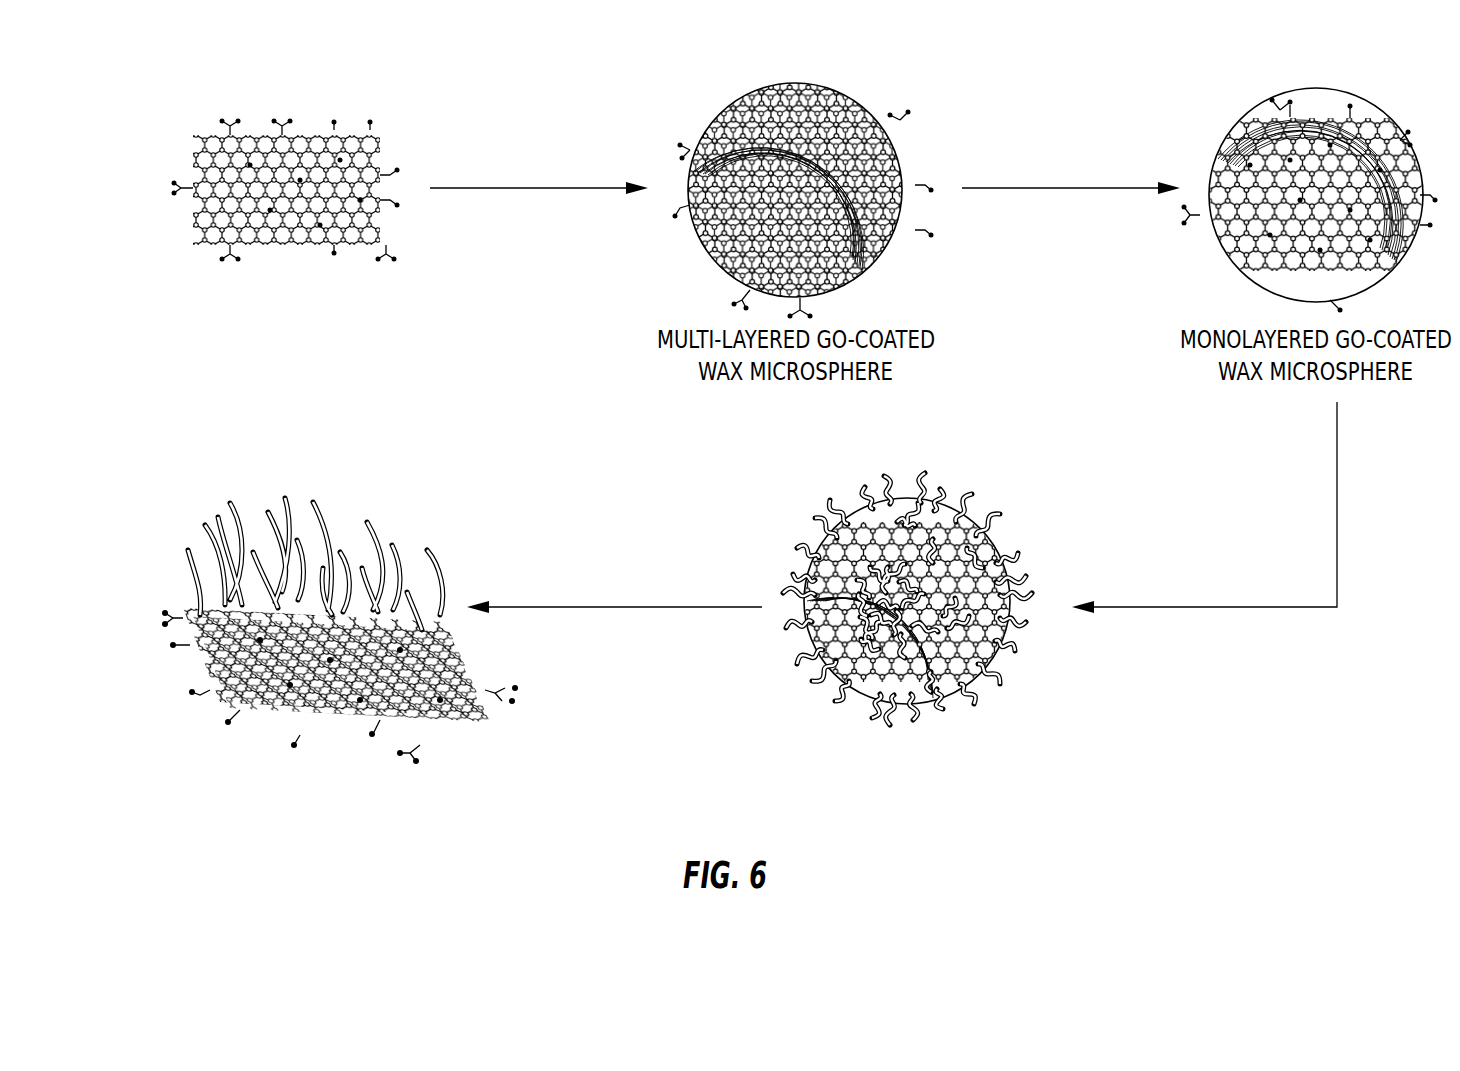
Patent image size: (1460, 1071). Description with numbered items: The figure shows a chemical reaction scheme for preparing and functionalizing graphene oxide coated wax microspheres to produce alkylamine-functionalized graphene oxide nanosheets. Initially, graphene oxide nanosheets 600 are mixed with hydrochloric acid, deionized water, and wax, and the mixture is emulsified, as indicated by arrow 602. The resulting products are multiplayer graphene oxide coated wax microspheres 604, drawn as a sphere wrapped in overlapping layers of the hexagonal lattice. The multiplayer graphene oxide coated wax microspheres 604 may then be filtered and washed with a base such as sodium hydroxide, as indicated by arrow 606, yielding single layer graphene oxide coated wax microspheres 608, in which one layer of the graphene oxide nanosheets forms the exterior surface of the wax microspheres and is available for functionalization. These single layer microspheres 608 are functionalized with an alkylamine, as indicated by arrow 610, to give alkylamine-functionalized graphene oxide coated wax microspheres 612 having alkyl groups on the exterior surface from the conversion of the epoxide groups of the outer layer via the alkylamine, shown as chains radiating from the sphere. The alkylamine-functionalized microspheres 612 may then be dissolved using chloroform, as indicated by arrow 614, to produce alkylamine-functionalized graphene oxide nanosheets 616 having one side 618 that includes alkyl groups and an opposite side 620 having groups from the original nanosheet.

The graphene oxide nanosheets 600 is at (228, 100).
The emulsification arrow 602 is at (458, 186).
The multiplayer graphene oxide coated wax microspheres 604 is at (699, 101).
The washing arrow 606 is at (1005, 186).
The single layer graphene oxide coated wax microspheres 608 is at (1226, 102).
The alkylamine functionalization arrow 610 is at (1337, 532).
The alkylamine-functionalized graphene oxide coated wax microspheres 612 is at (803, 470).
The chloroform dissolution arrow 614 is at (540, 605).
The alkylamine-functionalized graphene oxide nanosheets 616 is at (298, 492).
The side including alkyl groups 618 is at (176, 610).
The opposite side 620 is at (216, 727).